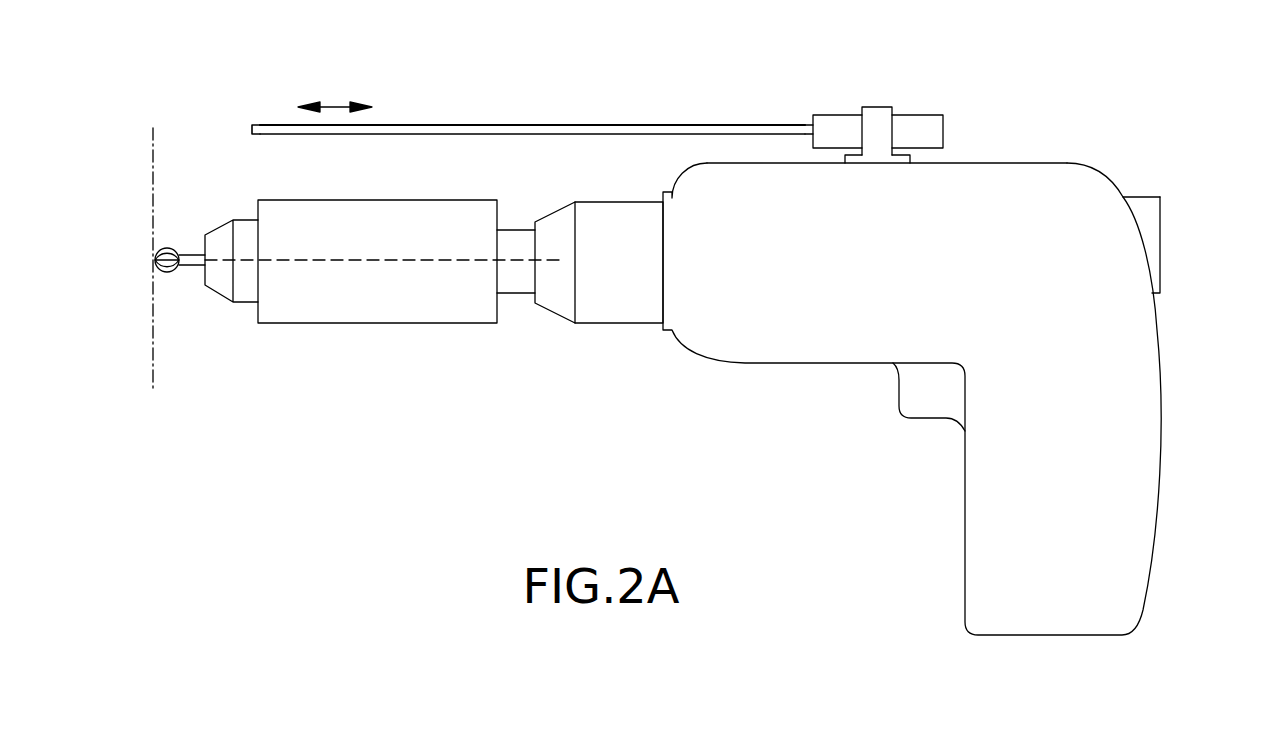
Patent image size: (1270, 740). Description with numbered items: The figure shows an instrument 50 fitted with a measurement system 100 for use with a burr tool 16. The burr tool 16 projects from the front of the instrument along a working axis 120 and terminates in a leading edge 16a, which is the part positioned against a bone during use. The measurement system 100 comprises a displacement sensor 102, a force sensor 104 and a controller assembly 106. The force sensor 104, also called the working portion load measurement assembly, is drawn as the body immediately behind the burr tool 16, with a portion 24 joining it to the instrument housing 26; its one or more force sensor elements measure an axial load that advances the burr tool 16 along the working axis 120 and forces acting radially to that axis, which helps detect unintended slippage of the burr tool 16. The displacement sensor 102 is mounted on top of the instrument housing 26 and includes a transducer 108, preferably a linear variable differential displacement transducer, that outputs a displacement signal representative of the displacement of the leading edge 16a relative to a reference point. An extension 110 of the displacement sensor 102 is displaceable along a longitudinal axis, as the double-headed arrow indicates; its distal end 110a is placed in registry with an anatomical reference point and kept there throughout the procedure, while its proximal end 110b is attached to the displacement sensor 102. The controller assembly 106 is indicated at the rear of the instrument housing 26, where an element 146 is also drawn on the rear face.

The burr tool 16 is at (199, 268).
The leading edge 16a is at (156, 260).
The chuck / nose portion 24 is at (636, 358).
The instrument housing 26 is at (1025, 163).
The instrument 50 is at (822, 428).
The measurement system 100 is at (415, 428).
The displacement sensor 102 is at (898, 82).
The force sensor 104 is at (420, 352).
The controller assembly 106 is at (1180, 185).
The transducer 108 is at (930, 113).
The extension 110 is at (480, 125).
The distal end 110a is at (252, 124).
The proximal end 110b is at (813, 120).
The working axis 120 is at (341, 259).
The rear housing panel 146 is at (1162, 243).